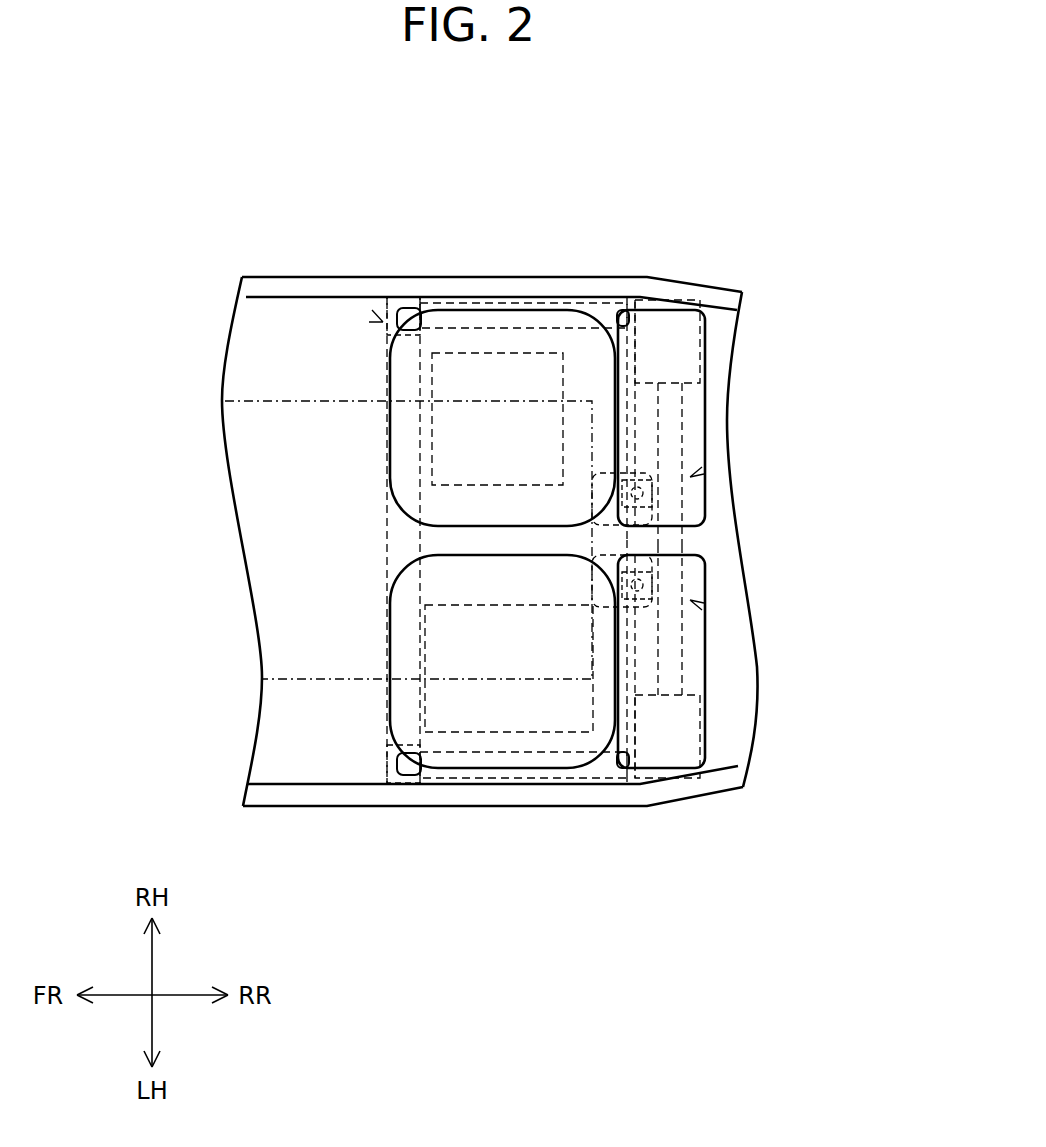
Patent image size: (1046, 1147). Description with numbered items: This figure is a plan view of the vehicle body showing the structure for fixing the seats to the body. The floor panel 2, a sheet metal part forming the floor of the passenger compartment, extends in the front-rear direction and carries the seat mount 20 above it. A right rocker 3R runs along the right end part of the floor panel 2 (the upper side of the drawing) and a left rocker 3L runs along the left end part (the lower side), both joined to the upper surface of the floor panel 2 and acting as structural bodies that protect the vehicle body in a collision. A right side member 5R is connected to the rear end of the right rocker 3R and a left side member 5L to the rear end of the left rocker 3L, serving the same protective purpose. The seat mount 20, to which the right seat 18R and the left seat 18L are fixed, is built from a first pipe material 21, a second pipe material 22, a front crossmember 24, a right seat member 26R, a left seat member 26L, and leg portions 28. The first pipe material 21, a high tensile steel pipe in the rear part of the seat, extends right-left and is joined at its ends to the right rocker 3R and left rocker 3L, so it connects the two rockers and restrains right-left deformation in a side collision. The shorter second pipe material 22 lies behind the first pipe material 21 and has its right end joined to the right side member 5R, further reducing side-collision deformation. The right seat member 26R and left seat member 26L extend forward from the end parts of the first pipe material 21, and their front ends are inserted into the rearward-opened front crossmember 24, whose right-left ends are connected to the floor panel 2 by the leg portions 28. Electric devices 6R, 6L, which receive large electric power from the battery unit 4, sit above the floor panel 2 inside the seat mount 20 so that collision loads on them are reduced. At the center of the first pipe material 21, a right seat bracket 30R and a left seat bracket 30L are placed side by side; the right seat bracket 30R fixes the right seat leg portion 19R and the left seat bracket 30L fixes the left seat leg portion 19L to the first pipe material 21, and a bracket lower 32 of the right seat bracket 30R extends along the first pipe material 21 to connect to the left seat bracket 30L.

The floor panel 2 is at (360, 793).
The right rocker 3R is at (605, 285).
The left rocker 3L is at (608, 790).
The battery unit 4 is at (335, 680).
The right side member 5R is at (714, 330).
The left side member 5L is at (714, 745).
The right electric device 6R is at (512, 372).
The left electric device 6L is at (513, 708).
The right seat 18R is at (690, 358).
The left seat 18L is at (690, 716).
The right seat leg portion 19R is at (645, 502).
The left seat leg portion 19L is at (645, 574).
The seat mount 20 is at (383, 322).
The first pipe material 21 is at (622, 653).
The second pipe material 22 is at (682, 420).
The front crossmember 24 is at (397, 540).
The right seat member 26R is at (548, 310).
The left seat member 26L is at (548, 780).
The leg portions 28 is at (410, 300).
The right seat bracket 30R is at (690, 477).
The left seat bracket 30L is at (690, 600).
The bracket lower 32 is at (600, 543).